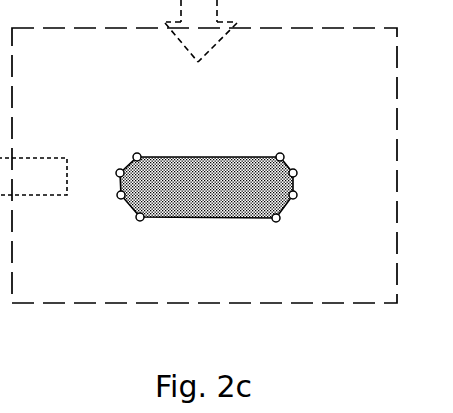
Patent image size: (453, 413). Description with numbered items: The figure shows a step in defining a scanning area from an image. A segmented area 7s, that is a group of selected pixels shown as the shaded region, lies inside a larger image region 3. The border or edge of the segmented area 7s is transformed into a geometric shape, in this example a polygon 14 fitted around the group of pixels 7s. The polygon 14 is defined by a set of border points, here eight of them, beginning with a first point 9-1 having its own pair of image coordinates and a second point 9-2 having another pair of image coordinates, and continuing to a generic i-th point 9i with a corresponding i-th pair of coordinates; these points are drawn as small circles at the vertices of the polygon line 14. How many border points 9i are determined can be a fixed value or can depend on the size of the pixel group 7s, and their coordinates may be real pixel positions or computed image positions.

The machine bed / work area 3 is at (50, 66).
The segmented area 7s is at (223, 200).
The first polygon point 9-1 is at (217, 130).
The second polygon point 9-2 is at (123, 176).
The border point 9i is at (285, 212).
The polygon 14 is at (285, 164).